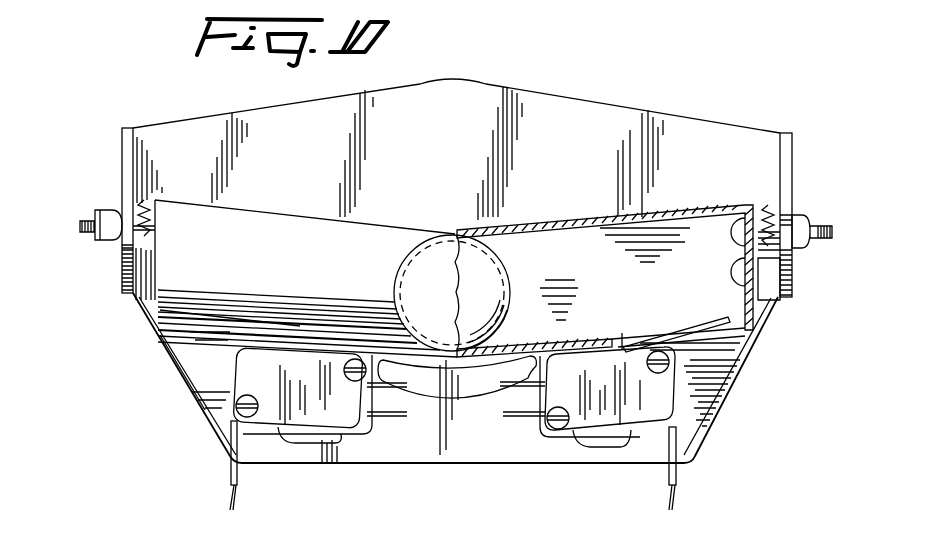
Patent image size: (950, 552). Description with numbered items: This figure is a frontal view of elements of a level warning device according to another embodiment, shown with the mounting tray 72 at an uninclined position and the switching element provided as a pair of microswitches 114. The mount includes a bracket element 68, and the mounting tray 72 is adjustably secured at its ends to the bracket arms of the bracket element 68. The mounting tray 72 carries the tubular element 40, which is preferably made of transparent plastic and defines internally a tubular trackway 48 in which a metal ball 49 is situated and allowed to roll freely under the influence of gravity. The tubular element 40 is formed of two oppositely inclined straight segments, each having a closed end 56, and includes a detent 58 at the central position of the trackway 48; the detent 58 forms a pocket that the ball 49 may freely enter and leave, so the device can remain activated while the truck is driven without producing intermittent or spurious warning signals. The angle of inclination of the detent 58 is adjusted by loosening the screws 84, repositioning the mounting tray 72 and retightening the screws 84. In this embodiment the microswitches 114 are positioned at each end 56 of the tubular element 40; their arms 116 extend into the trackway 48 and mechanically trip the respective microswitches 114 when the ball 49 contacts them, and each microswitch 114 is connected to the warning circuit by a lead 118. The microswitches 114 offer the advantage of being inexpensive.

The tubular element 40 is at (275, 210).
The tubular trackway 48 is at (570, 340).
The metal ball 49 is at (487, 262).
The closed end 56 is at (190, 302).
The detent 58 is at (432, 262).
The bracket element 68 is at (557, 93).
The mounting tray 72 is at (212, 385).
The screws 84 is at (123, 257).
The microswitches 114 is at (338, 420).
The arms 116 is at (722, 323).
The lead 118 is at (232, 478).